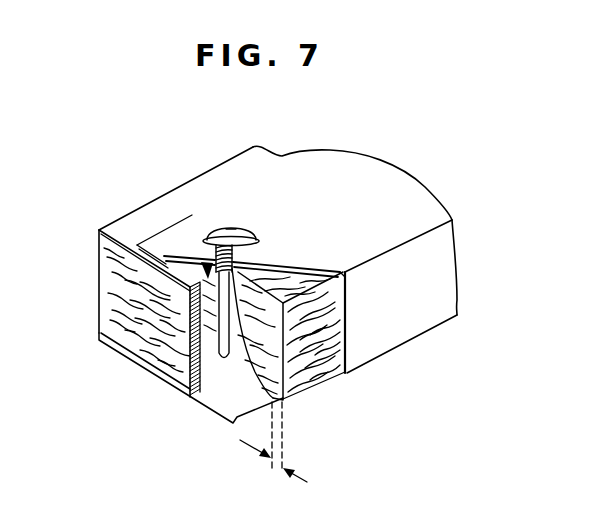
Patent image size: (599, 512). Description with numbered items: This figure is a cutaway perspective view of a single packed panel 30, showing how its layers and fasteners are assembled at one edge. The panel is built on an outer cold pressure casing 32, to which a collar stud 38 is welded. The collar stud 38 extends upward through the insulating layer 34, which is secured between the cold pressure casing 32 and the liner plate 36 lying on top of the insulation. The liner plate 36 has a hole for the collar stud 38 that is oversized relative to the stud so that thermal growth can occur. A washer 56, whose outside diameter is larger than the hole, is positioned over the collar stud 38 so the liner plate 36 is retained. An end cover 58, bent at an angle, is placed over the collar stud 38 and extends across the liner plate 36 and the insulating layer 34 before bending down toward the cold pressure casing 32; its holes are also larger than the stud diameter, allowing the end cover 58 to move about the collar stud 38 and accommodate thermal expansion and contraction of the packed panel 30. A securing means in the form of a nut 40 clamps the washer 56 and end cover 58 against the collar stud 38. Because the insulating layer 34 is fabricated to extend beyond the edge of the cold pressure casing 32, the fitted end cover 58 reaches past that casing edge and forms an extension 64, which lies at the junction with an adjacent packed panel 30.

The packed panel 30 is at (114, 203).
The cold pressure casing 32 is at (222, 401).
The insulating layer 34 is at (99, 297).
The liner plate 36 is at (281, 260).
The collar stud 38 is at (212, 350).
The nut 40 is at (240, 231).
The washer 56 is at (258, 243).
The end cover 58 is at (411, 193).
The extension 64 is at (292, 450).